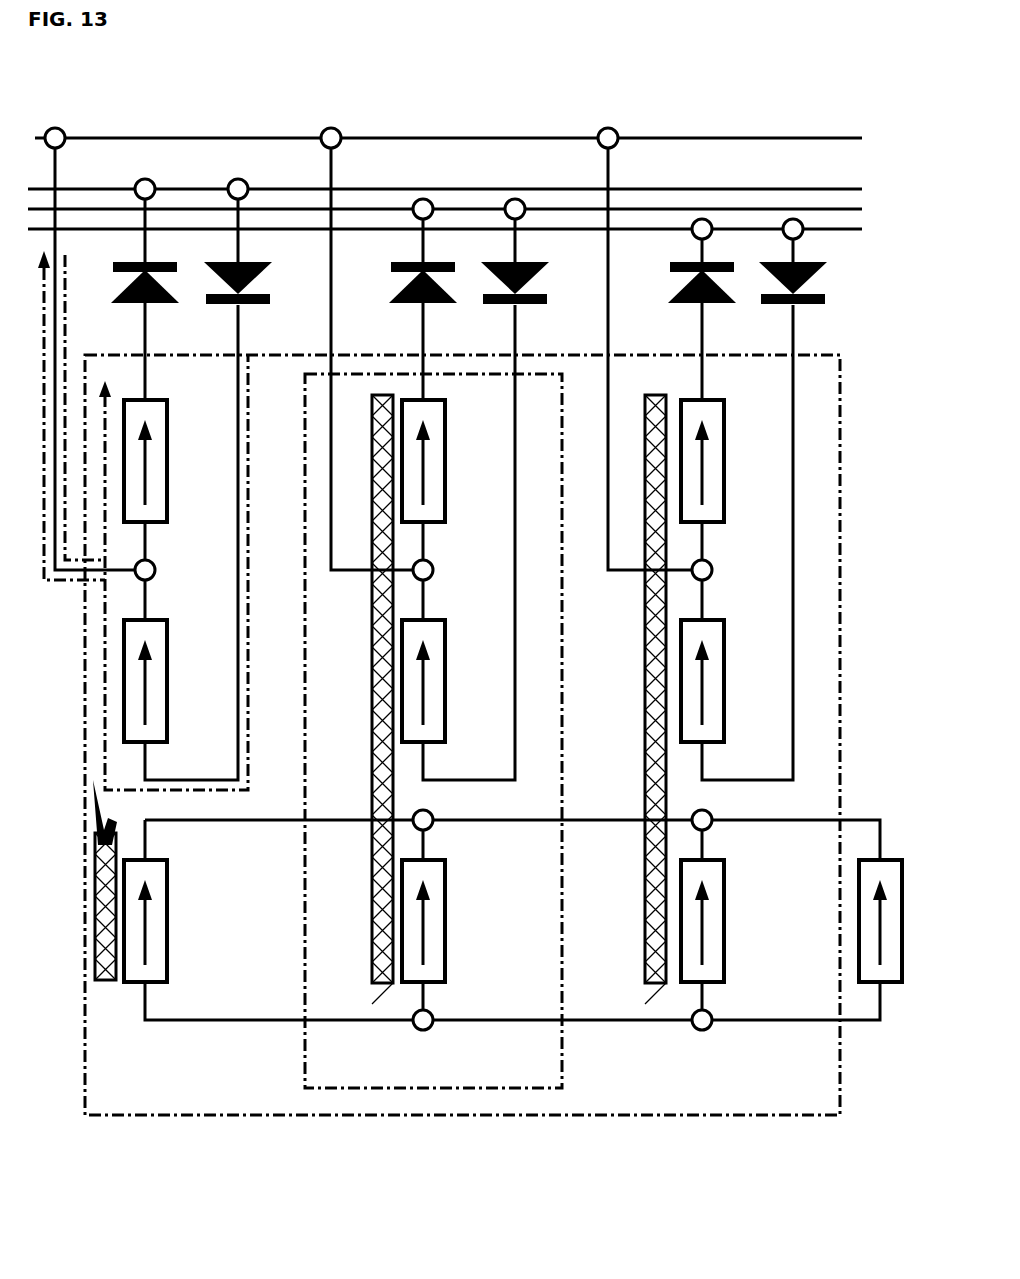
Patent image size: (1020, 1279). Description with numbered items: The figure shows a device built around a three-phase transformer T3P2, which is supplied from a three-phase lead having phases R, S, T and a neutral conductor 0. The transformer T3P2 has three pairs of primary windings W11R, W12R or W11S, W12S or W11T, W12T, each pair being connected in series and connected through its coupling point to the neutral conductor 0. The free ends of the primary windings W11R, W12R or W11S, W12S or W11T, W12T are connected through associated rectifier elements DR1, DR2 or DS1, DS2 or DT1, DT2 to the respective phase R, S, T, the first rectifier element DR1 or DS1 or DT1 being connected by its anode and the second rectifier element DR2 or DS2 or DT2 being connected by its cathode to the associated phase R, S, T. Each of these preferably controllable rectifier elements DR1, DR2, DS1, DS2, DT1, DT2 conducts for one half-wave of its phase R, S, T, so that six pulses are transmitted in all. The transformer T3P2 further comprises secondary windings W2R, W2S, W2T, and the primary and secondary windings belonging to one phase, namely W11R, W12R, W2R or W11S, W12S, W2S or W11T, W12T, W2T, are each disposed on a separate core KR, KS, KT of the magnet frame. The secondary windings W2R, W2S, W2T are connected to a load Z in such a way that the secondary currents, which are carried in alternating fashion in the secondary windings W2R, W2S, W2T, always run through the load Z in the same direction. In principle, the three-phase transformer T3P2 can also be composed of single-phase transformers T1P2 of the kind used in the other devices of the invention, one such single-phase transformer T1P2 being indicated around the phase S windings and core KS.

The neutral conductor 0 is at (461, 139).
The phase R is at (458, 190).
The phase S is at (457, 211).
The phase T is at (457, 233).
The first rectifier element DR1 is at (141, 304).
The second rectifier element DR2 is at (233, 304).
The first rectifier element DS1 is at (420, 304).
The second rectifier element DS2 is at (513, 304).
The first rectifier element DT1 is at (699, 304).
The second rectifier element DT2 is at (791, 304).
The primary winding W11R is at (171, 461).
The primary winding W12R is at (171, 681).
The secondary winding W2R is at (168, 921).
The primary winding W11S is at (449, 461).
The primary winding W12S is at (449, 681).
The secondary winding W2S is at (445, 921).
The primary winding W11T is at (728, 461).
The primary winding W12T is at (728, 681).
The secondary winding W2T is at (724, 921).
The core KR is at (105, 899).
The core KS is at (379, 705).
The core KT is at (654, 705).
The single-phase transformer T1P2 is at (433, 731).
The three-phase transformer T3P2 is at (462, 735).
The load Z is at (880, 962).